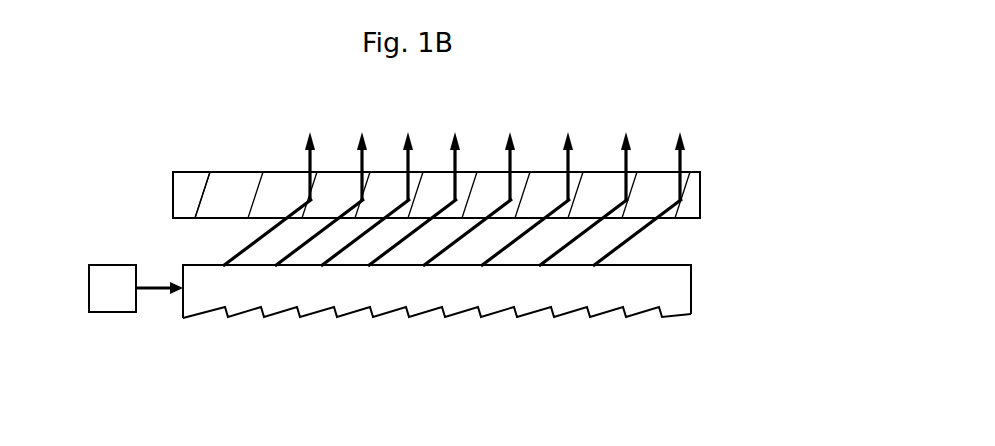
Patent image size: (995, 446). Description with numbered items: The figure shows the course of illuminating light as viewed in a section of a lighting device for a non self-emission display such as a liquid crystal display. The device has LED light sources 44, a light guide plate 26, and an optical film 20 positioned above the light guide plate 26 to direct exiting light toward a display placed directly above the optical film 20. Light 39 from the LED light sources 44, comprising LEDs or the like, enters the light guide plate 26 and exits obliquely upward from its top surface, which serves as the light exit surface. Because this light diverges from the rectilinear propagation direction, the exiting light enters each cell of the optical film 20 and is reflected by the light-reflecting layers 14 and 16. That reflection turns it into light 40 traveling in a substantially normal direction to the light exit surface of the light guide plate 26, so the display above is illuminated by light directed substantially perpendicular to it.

The light-reflecting layer 14 is at (257, 190).
The light-reflecting layer 16 is at (240, 168).
The optical film 20 is at (701, 182).
The light guide plate 26 is at (678, 287).
The light 39 is at (154, 290).
The light 40 is at (312, 160).
The LED light source 44 is at (108, 302).